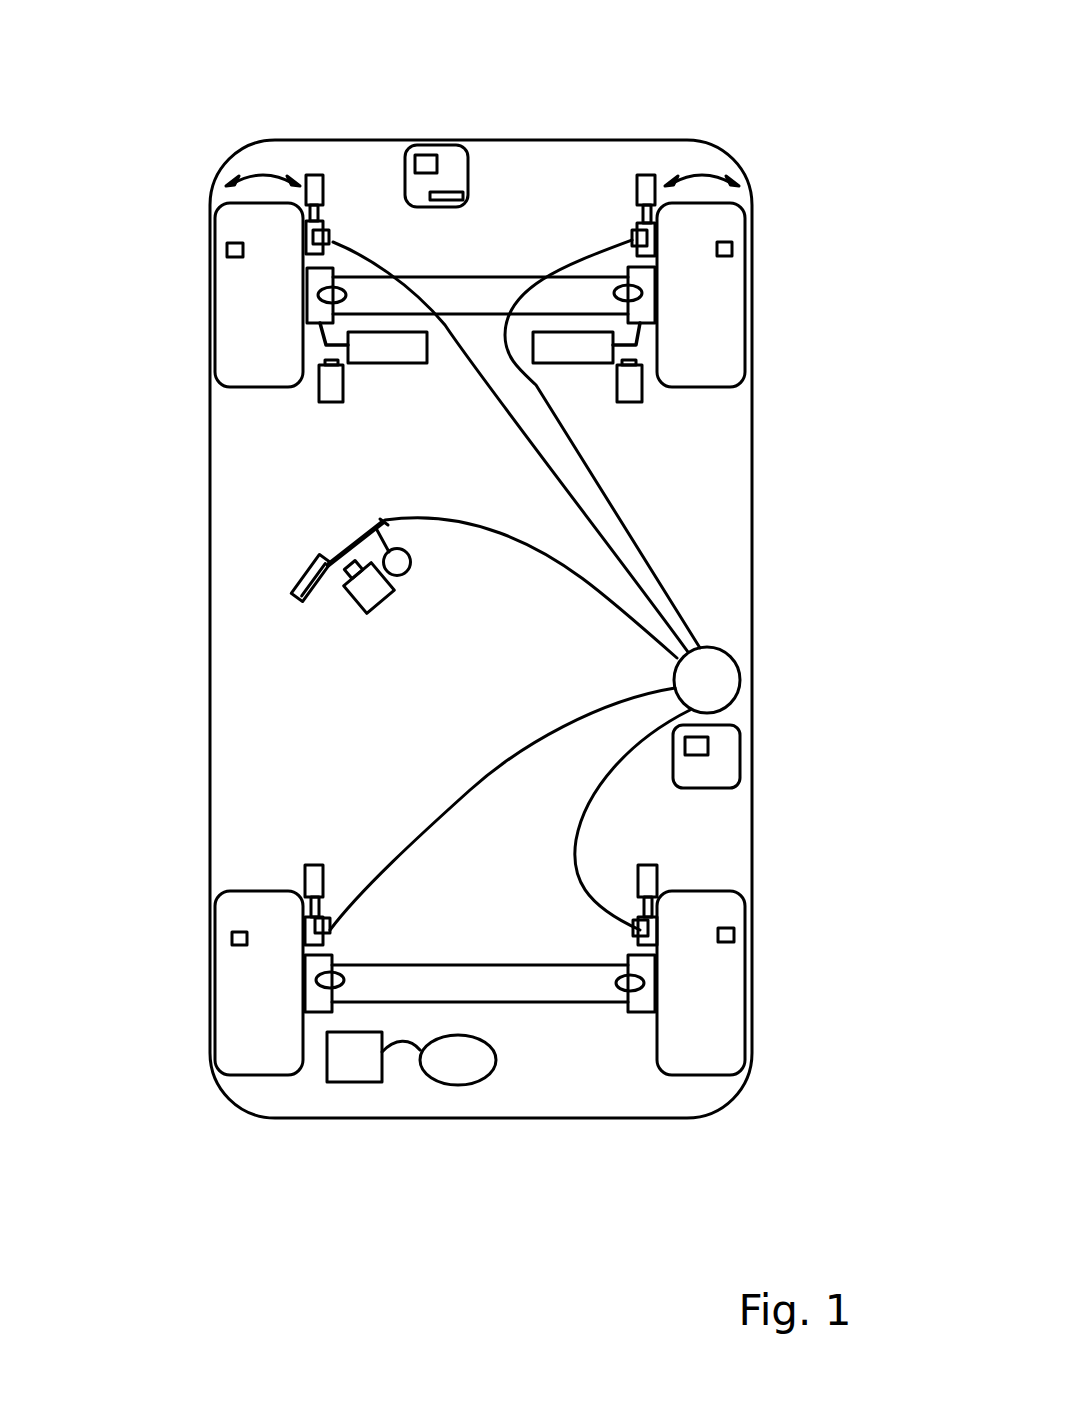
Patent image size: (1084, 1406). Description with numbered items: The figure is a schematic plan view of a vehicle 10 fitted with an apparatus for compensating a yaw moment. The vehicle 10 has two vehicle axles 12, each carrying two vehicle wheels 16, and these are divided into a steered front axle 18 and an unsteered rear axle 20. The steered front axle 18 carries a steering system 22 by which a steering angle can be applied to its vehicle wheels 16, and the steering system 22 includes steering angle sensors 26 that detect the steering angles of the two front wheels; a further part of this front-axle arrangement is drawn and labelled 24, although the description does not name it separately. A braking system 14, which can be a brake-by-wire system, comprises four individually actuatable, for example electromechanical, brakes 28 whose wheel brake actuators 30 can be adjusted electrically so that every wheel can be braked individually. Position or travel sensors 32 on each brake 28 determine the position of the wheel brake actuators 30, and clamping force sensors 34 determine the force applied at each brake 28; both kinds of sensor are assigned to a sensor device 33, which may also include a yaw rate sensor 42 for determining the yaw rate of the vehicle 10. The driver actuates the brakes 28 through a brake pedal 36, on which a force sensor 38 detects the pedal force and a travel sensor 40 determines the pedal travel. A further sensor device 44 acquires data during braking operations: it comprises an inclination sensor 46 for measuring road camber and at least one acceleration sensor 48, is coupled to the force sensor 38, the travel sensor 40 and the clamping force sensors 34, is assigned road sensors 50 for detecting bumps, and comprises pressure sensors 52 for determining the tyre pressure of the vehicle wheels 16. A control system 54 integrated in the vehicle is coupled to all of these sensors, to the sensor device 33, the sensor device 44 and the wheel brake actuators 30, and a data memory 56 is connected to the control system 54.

The vehicle 10 is at (207, 108).
The vehicle axles 12 is at (465, 255).
The braking system 14 is at (728, 649).
The vehicle wheels 16 is at (260, 250).
The steered front axle 18 is at (488, 294).
The unsteered rear axle 20 is at (515, 988).
The steering system 22 is at (309, 398).
The electric motor 24 is at (388, 355).
The steering angle sensors 26 is at (327, 381).
The brakes 28 is at (330, 216).
The wheel brake actuators 30 is at (312, 252).
The position or travel sensors 32 is at (315, 173).
The sensor device 33 is at (718, 772).
The clamping force sensors 34 is at (312, 238).
The brake pedal 36 is at (303, 603).
The force sensor 38 is at (370, 593).
The travel sensor 40 is at (407, 568).
The yaw rate sensor 42 is at (707, 744).
The further sensor device 44 is at (453, 178).
The inclination sensor 46 is at (443, 199).
The acceleration sensor 48 is at (423, 165).
The road sensors 50 is at (325, 297).
The pressure sensors 52 is at (230, 247).
The control system 54 is at (352, 1057).
The data memory 56 is at (463, 1057).